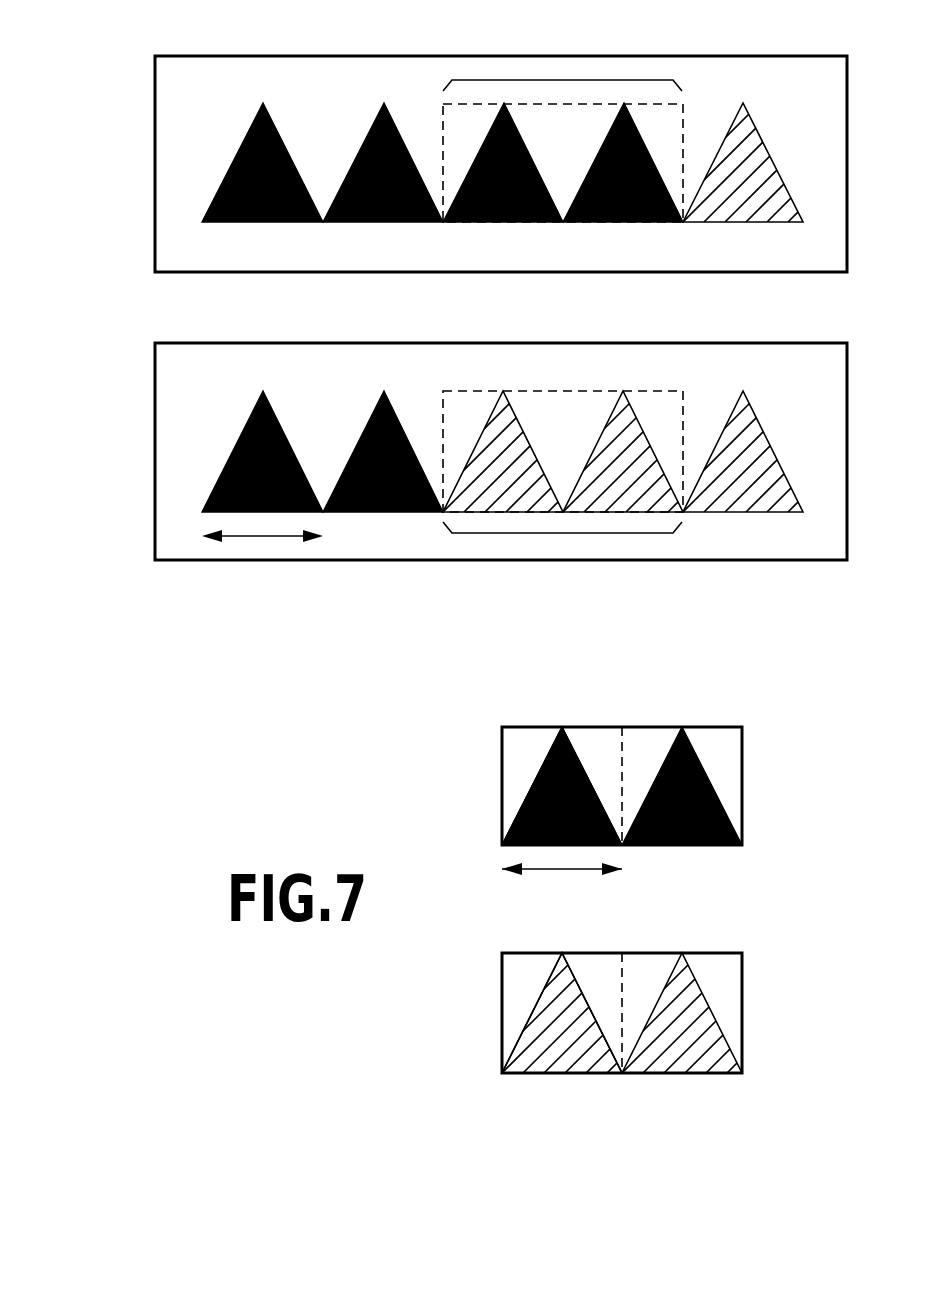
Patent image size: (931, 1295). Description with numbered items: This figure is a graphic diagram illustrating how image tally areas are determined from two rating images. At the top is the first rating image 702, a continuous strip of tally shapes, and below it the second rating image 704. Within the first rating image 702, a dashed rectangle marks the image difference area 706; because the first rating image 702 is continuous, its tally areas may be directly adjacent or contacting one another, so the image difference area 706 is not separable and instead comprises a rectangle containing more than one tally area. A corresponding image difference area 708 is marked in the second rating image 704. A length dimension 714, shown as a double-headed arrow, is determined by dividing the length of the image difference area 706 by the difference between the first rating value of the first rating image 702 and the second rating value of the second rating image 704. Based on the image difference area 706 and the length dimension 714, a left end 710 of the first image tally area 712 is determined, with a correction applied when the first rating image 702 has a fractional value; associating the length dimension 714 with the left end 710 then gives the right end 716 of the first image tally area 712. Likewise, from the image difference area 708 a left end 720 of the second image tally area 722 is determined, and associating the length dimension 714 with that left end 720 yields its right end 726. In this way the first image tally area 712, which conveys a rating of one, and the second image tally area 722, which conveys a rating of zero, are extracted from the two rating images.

The first rating image 702 is at (155, 167).
The second rating image 704 is at (155, 456).
The image difference area 706 is at (565, 80).
The image difference area 708 is at (560, 533).
The left end 710 is at (502, 788).
The first image tally area 712 is at (562, 727).
The length dimension 714 is at (261, 537).
The right end 716 is at (624, 745).
The left end 720 is at (502, 1016).
The second image tally area 722 is at (560, 1073).
The right end 726 is at (624, 985).